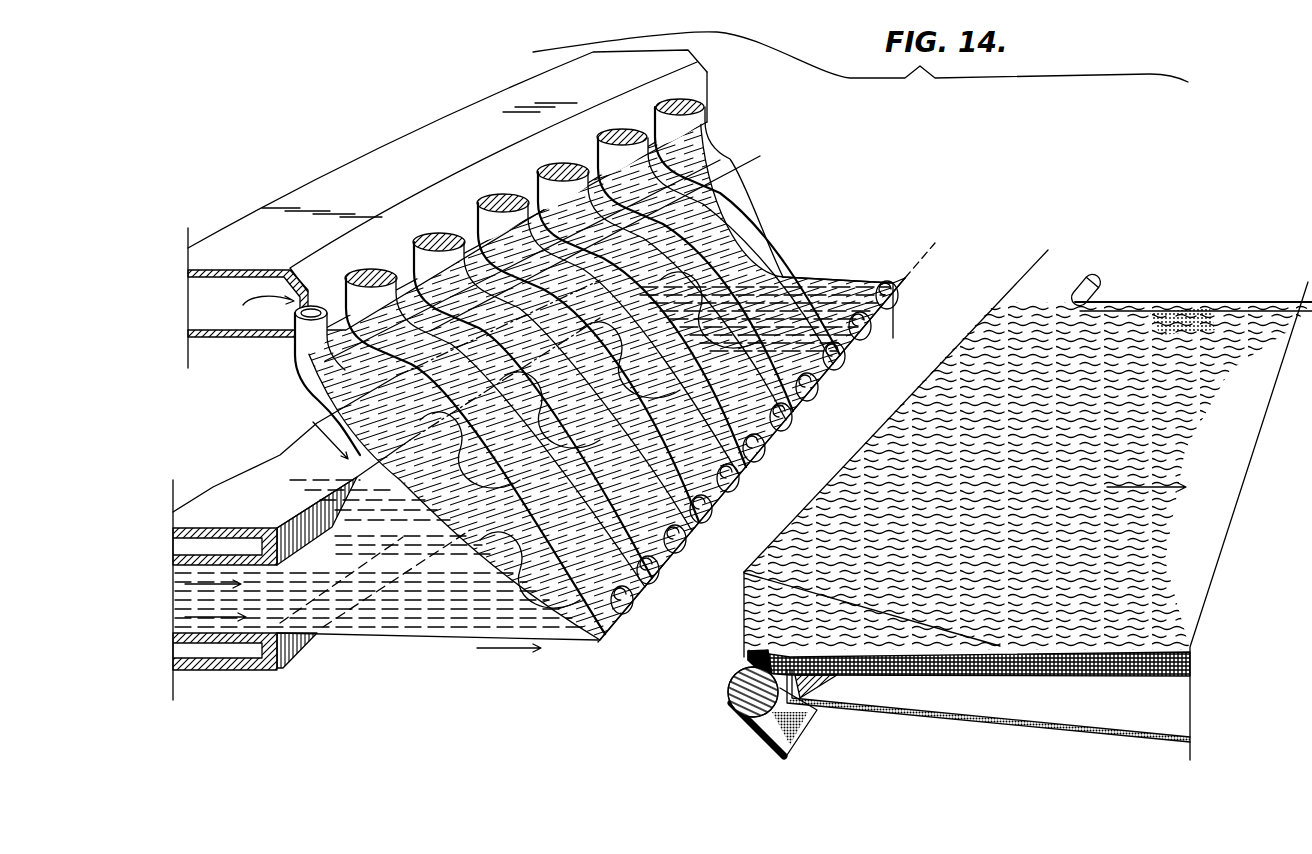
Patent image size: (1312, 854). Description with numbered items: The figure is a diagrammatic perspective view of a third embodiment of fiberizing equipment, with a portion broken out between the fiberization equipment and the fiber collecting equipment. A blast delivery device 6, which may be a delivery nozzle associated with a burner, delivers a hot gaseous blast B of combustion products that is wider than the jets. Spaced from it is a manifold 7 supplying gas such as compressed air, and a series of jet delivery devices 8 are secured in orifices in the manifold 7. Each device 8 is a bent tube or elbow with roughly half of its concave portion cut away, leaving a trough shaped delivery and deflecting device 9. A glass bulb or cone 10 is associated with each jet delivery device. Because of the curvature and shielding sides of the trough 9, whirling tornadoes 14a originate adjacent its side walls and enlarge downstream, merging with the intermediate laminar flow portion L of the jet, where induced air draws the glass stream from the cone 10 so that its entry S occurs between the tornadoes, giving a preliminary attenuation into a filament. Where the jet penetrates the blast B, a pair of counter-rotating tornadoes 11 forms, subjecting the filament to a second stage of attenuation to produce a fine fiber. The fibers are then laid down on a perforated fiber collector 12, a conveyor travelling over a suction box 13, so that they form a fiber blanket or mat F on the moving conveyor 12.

The blast delivery device 6 is at (210, 500).
The manifold 7 is at (376, 154).
The jet delivery device 8 is at (283, 355).
The trough shaped delivery and deflecting device 9 is at (317, 397).
The glass bulb or cone 10 is at (365, 269).
The tornadoes 11 is at (828, 388).
The perforated fiber collector 12 is at (746, 660).
The suction box 13 is at (948, 718).
The tornadoes 14a is at (360, 443).
The laminar flow portion L is at (303, 379).
The glass stream entry S is at (335, 384).
The blast B is at (400, 637).
The fiber blanket or mat F is at (1122, 640).